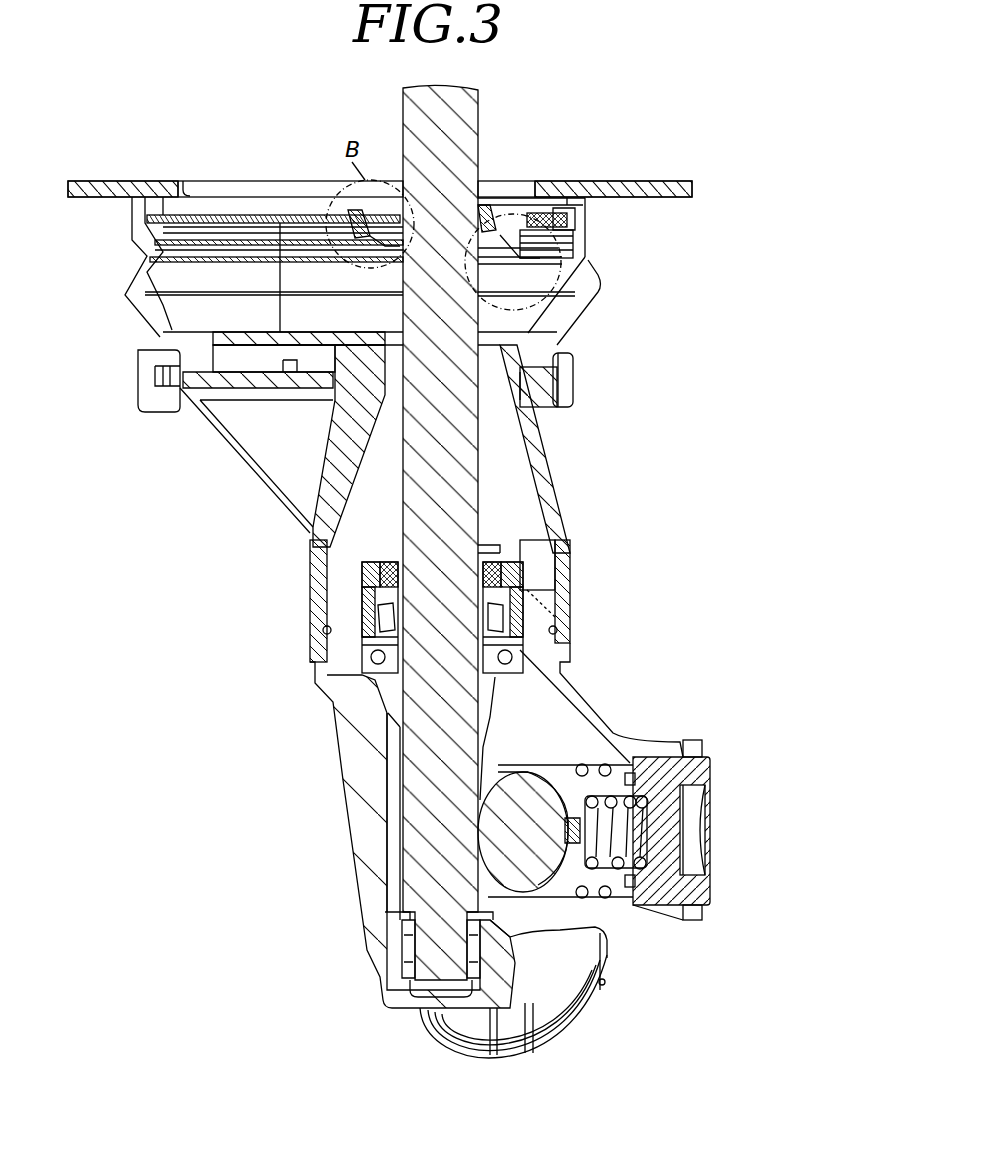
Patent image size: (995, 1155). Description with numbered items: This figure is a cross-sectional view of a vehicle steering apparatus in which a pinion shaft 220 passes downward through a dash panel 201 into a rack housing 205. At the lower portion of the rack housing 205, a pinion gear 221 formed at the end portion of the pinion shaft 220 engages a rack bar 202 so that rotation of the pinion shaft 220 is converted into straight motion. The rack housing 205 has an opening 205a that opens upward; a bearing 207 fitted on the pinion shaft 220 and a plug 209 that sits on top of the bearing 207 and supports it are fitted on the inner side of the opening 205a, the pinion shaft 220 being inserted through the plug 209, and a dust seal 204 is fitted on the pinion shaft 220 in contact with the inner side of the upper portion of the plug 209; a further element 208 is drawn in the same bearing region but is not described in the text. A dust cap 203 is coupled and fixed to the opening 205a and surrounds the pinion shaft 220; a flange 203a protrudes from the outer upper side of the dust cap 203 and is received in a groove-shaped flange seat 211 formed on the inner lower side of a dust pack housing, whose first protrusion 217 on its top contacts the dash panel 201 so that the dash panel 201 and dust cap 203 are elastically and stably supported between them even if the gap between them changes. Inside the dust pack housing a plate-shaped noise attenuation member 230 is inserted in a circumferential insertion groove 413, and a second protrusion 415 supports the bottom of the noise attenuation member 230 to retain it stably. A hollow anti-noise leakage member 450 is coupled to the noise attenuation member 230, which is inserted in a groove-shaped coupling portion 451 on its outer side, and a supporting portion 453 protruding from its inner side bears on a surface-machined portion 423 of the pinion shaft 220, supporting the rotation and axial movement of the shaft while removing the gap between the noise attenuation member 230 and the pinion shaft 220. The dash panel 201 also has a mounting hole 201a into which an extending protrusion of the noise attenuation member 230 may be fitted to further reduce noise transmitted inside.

The dash panel 201 is at (692, 189).
The mounting hole 201a is at (180, 190).
The first protrusion 217 is at (140, 196).
The pinion shaft 220 is at (465, 422).
The dust cap 203 is at (553, 507).
The flange 203a is at (572, 400).
The anti-noise leakage member 450 is at (563, 370).
The flange seat 211 is at (560, 367).
The supporting portion 453 is at (480, 208).
The surface-machined portion 423 is at (500, 235).
The coupling portion 451 is at (567, 200).
The noise attenuation member 230 is at (565, 213).
The insertion groove 413 is at (560, 235).
The second protrusion 415 is at (553, 255).
The rack housing 205 is at (580, 730).
The opening 205a is at (565, 592).
The plug 209 is at (322, 630).
The dust seal 204 is at (368, 610).
The retainer 208 is at (363, 623).
The bearing 207 is at (377, 647).
The pinion gear 221 is at (400, 820).
The rack bar 202 is at (535, 845).